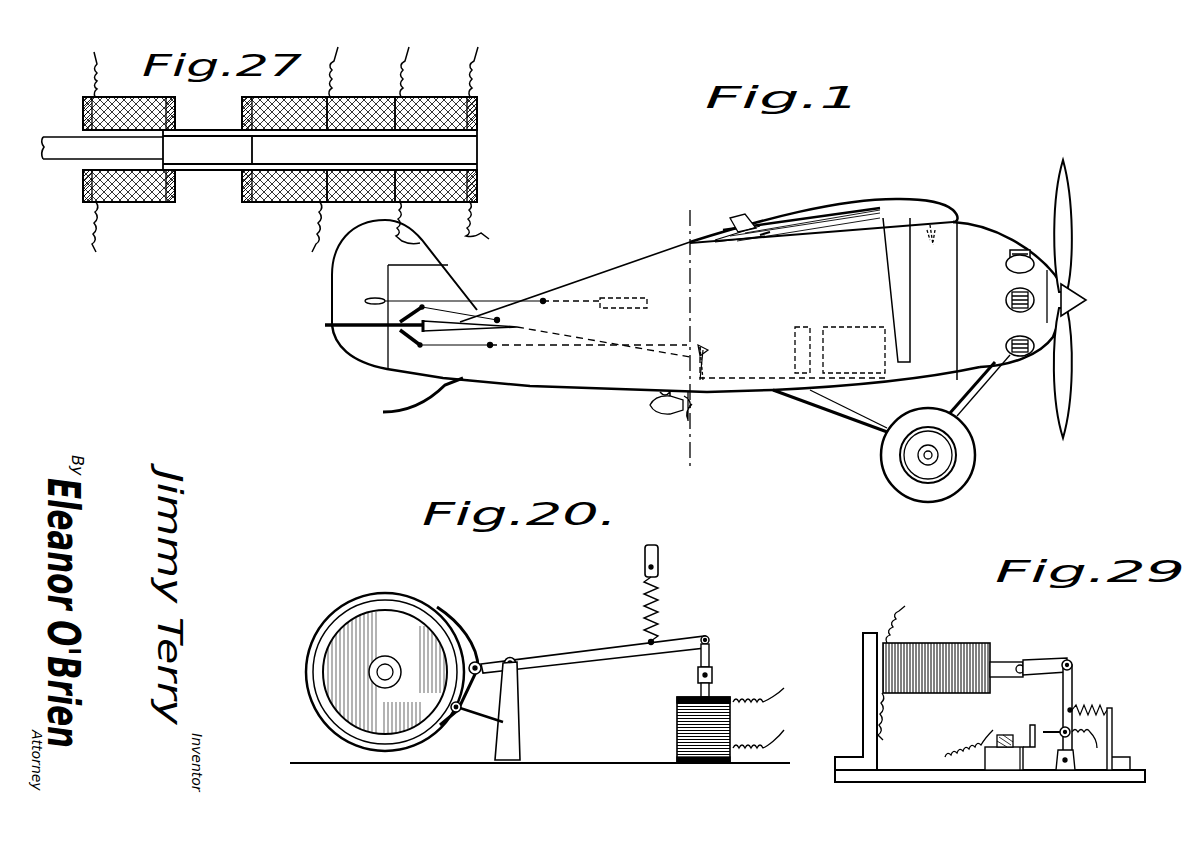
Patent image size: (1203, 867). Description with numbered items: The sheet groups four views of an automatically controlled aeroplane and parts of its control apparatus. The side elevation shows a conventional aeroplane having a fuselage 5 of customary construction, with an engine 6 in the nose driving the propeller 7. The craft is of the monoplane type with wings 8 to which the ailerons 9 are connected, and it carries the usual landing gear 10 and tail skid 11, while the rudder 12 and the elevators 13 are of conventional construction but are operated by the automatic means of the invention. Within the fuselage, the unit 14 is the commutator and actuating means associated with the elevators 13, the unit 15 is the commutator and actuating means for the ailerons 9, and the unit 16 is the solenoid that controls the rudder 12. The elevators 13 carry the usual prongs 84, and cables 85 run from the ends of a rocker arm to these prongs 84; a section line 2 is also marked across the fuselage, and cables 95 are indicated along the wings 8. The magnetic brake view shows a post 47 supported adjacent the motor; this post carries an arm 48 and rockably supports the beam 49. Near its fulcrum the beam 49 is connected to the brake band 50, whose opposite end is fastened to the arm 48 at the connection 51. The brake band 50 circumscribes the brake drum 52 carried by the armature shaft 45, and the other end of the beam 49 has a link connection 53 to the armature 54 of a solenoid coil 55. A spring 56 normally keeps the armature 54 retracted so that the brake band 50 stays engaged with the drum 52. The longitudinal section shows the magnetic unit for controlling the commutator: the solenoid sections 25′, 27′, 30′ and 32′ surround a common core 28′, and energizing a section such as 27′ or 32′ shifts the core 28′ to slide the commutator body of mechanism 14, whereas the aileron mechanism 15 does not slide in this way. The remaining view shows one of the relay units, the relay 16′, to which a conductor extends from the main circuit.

In FIG. 1, the section line 2 is at (684, 345).
In FIG. 1, the fuselage 5 is at (640, 257).
In FIG. 1, the engine 6 is at (1020, 250).
In FIG. 1, the propeller 7 is at (1067, 243).
In FIG. 1, the wings 8 is at (840, 207).
In FIG. 1, the ailerons 9 is at (712, 234).
In FIG. 1, the landing gear 10 is at (907, 477).
In FIG. 1, the tail skid 11 is at (423, 403).
In FIG. 1, the rudder 12 is at (331, 285).
In FIG. 1, the elevators 13 is at (353, 331).
In FIG. 1, the commutator 14 is at (848, 325).
In FIG. 1, the commutator and actuating means for the ailerons 15 is at (797, 325).
In FIG. 1, the solenoid 16 is at (612, 283).
In FIG. 29, the relay 16′ is at (953, 643).
In FIG. 27, the solenoid section 25′ is at (155, 202).
In FIG. 27, the solenoid section 27′ is at (300, 200).
In FIG. 27, the common core 28′ is at (65, 150).
In FIG. 27, the solenoid section 30′ is at (350, 97).
In FIG. 27, the solenoid section 32′ is at (425, 97).
In FIG. 20, the armature shaft 45 is at (388, 668).
In FIG. 20, the post 47 is at (507, 742).
In FIG. 20, the arm 48 is at (487, 720).
In FIG. 20, the beam 49 is at (543, 660).
In FIG. 20, the brake band 50 is at (461, 637).
In FIG. 20, the connection 51 is at (484, 664).
In FIG. 20, the brake drum 52 is at (377, 607).
In FIG. 20, the link connection 53 is at (710, 655).
In FIG. 20, the armature 54 is at (712, 688).
In FIG. 20, the solenoid coil 55 is at (677, 720).
In FIG. 20, the spring 56 is at (653, 605).
In FIG. 1, the prongs 84 is at (433, 317).
In FIG. 1, the cables 85 is at (524, 327).
In FIG. 1, the aileron cables 95 is at (760, 240).